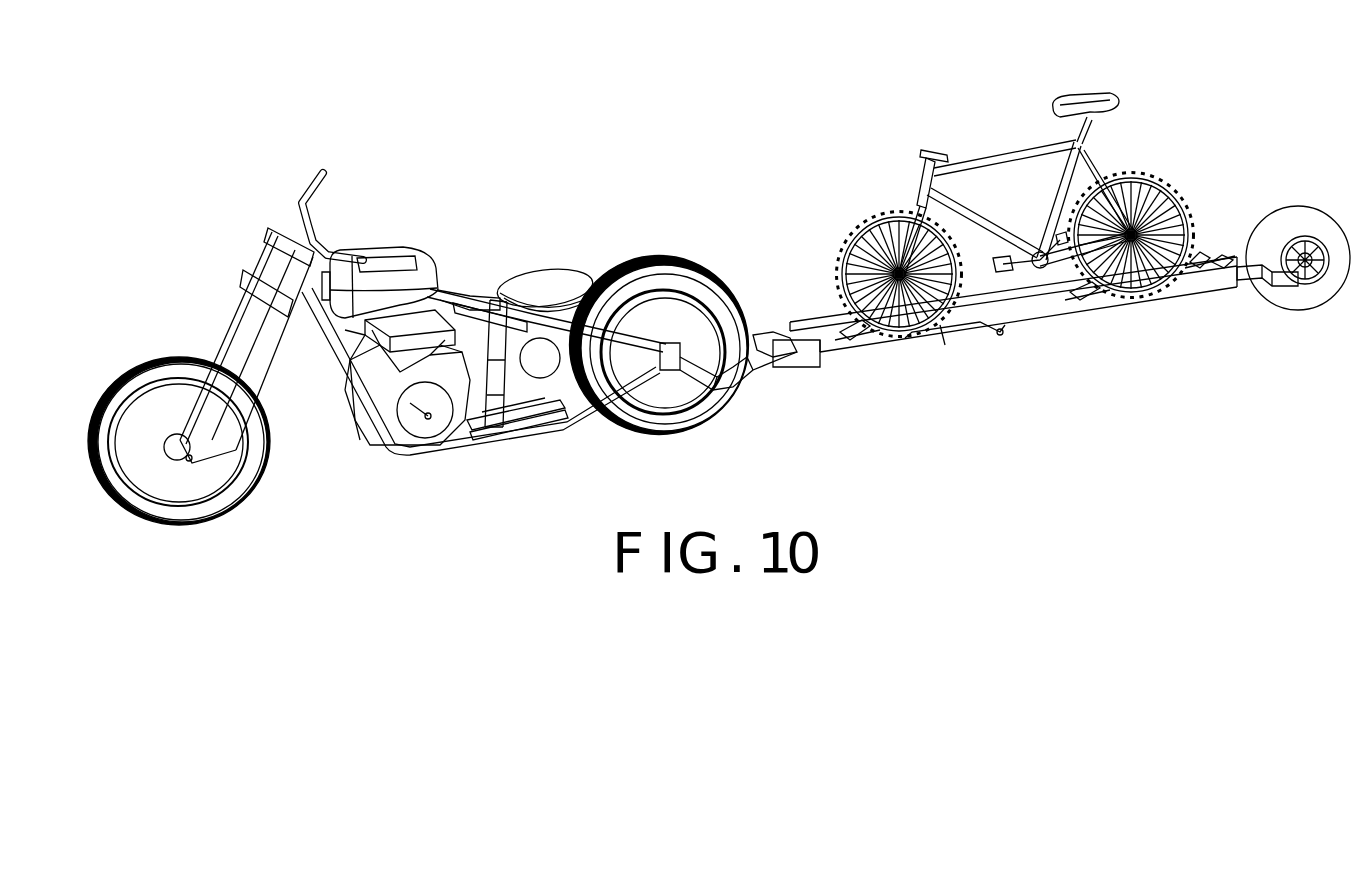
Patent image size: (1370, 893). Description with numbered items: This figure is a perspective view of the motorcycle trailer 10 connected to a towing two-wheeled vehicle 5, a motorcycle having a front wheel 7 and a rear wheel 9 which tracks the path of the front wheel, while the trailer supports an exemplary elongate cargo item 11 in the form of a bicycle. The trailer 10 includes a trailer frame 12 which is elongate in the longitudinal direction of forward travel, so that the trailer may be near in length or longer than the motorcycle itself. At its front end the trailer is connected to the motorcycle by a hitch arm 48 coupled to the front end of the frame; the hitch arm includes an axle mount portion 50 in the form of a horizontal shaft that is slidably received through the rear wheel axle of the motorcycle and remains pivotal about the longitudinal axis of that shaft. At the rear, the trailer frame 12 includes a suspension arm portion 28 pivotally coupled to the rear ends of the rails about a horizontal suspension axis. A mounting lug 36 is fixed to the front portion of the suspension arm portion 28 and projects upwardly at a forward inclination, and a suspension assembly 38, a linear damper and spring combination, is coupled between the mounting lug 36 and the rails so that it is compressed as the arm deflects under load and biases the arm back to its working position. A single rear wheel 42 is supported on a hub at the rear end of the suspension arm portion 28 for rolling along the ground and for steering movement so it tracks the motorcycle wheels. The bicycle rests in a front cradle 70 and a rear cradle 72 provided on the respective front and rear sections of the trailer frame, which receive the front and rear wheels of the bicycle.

The two-wheeled vehicle 5 is at (462, 218).
The front wheel 7 is at (155, 393).
The rear wheel 9 is at (636, 258).
The motorcycle trailer 10 is at (822, 374).
The elongate cargo item 11 is at (990, 158).
The trailer frame 12 is at (1031, 330).
The suspension arm portion 28 is at (1278, 296).
The mounting lug 36 is at (1215, 258).
The suspension assembly 38 is at (1198, 240).
The rear wheel 42 is at (1298, 205).
The hitch arm 48 is at (734, 397).
The axle mount portion 50 is at (679, 415).
The front cradle 70 is at (848, 342).
The rear cradle 72 is at (1075, 300).